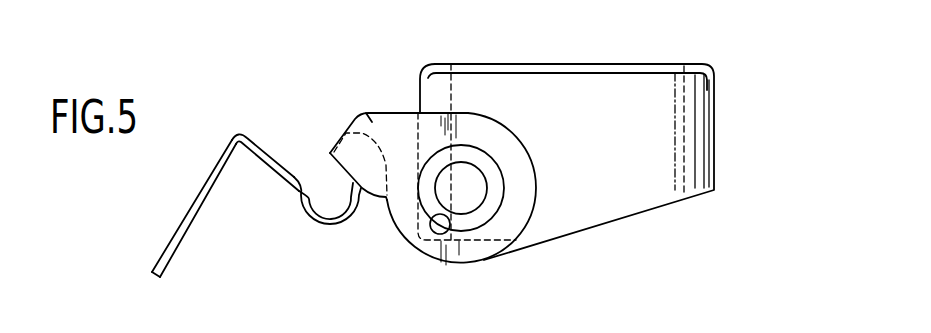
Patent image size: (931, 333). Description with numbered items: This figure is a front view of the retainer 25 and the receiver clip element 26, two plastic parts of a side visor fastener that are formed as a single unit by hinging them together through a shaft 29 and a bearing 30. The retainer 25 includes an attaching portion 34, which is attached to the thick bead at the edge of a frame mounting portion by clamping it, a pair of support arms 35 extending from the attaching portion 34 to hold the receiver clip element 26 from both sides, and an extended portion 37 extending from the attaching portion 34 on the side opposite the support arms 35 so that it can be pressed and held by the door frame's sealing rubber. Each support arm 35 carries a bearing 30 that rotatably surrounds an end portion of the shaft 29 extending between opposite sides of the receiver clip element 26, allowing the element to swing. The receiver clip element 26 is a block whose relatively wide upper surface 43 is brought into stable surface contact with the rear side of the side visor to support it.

The retainer 25 is at (252, 151).
The receiver clip element 26 is at (547, 167).
The shaft 29 is at (477, 200).
The bearing 30 is at (435, 218).
The attaching portion 34 is at (338, 224).
The support arms 35 is at (366, 113).
The extended portion 37 is at (188, 207).
The upper surface 43 is at (598, 64).